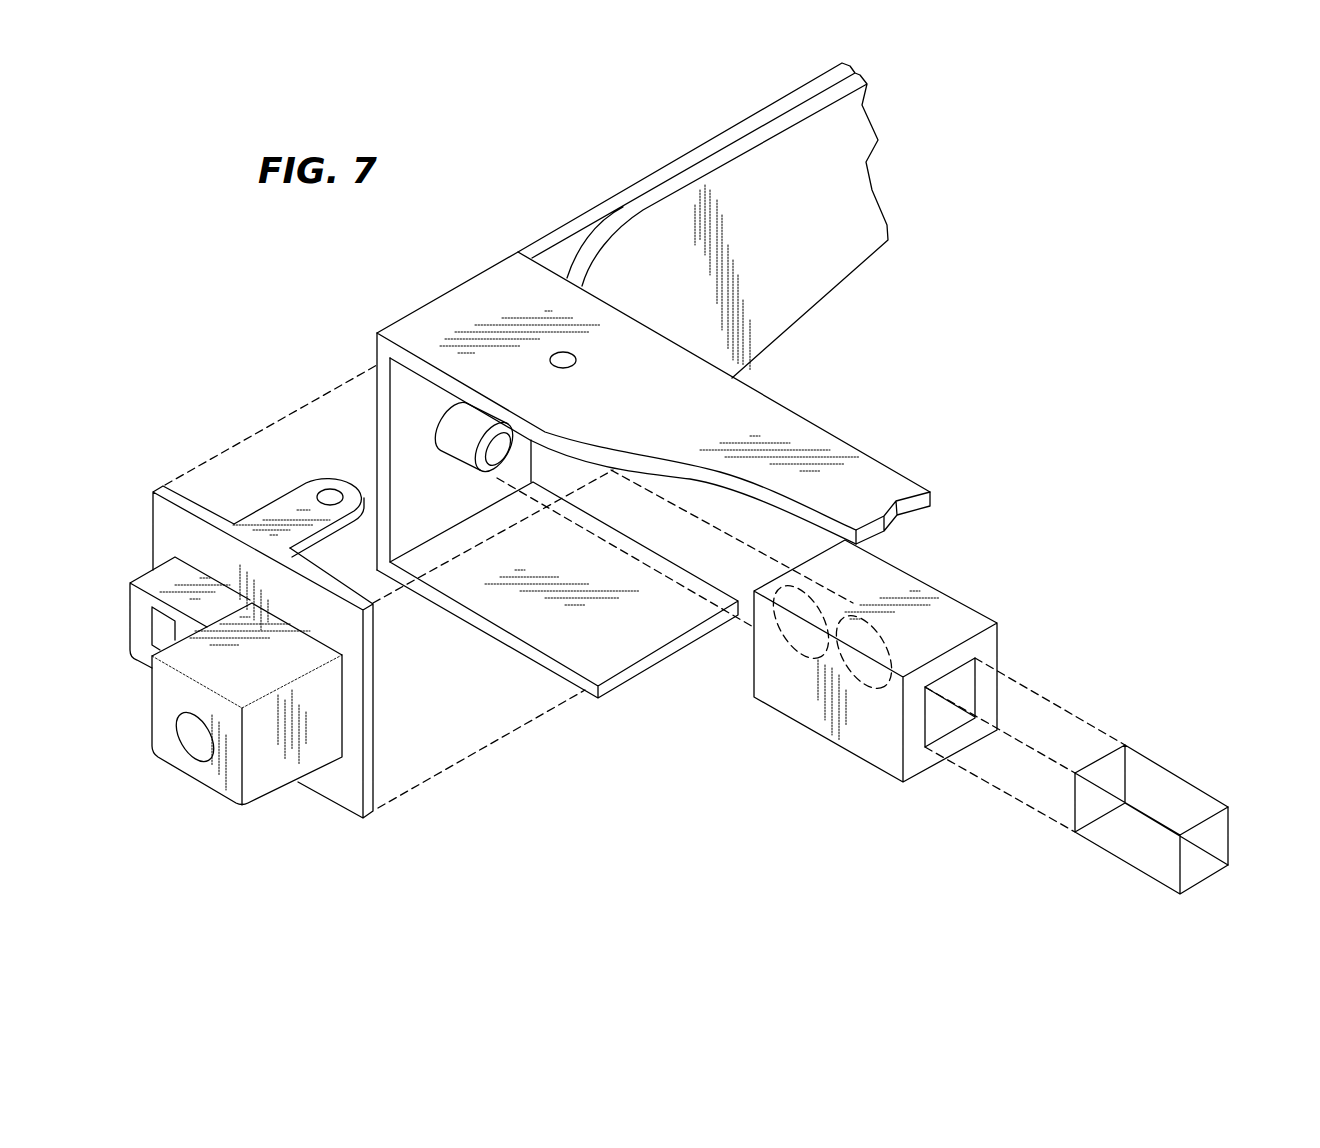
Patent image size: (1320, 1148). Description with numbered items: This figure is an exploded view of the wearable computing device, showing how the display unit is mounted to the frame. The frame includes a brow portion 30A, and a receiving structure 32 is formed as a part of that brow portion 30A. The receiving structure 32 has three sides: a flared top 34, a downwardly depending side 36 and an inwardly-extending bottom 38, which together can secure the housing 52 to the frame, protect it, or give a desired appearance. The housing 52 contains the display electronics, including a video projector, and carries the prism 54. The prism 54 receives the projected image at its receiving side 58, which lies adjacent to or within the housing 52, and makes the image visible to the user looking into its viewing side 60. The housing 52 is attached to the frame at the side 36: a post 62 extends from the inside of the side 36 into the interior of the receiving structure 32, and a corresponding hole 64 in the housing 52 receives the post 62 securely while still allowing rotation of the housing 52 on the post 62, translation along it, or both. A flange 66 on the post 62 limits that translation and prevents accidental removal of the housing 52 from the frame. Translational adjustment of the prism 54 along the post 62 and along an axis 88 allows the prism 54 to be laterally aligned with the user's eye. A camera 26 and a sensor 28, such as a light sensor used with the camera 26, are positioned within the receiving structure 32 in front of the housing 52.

The camera 26 is at (197, 738).
The sensor 28 is at (163, 636).
The brow portion 30A is at (900, 470).
The receiving structure 32 is at (522, 632).
The flared top 34 is at (474, 291).
The downwardly depending side 36 is at (406, 423).
The inwardly-extending bottom 38 is at (643, 636).
The housing 52 is at (882, 759).
The prism 54 is at (1185, 755).
The receiving side 58 is at (1097, 760).
The viewing side 60 is at (1213, 841).
The post 62 is at (448, 445).
The hole 64 is at (775, 713).
The flange 66 is at (487, 469).
The axis 88 is at (273, 797).